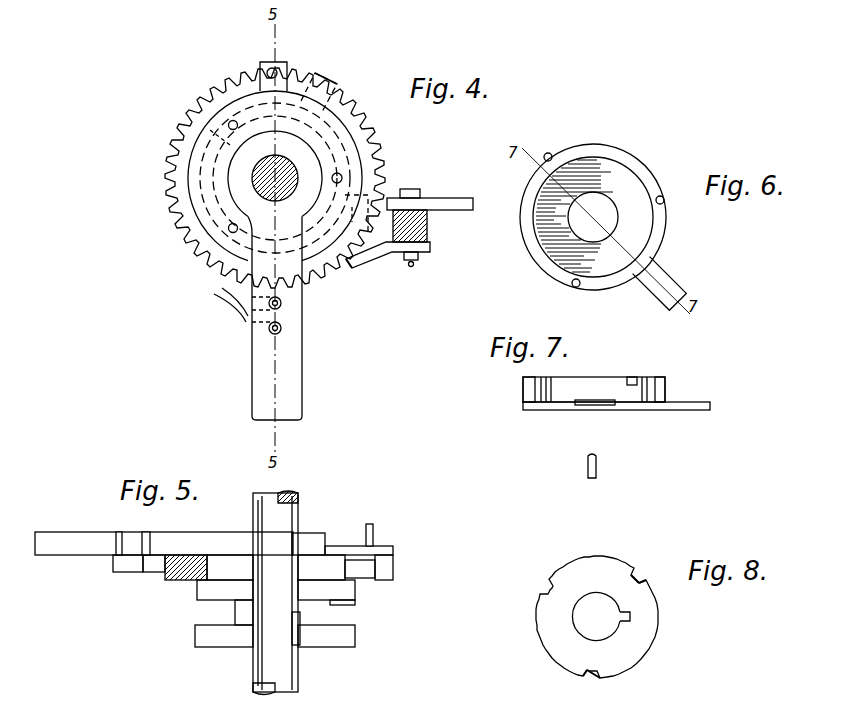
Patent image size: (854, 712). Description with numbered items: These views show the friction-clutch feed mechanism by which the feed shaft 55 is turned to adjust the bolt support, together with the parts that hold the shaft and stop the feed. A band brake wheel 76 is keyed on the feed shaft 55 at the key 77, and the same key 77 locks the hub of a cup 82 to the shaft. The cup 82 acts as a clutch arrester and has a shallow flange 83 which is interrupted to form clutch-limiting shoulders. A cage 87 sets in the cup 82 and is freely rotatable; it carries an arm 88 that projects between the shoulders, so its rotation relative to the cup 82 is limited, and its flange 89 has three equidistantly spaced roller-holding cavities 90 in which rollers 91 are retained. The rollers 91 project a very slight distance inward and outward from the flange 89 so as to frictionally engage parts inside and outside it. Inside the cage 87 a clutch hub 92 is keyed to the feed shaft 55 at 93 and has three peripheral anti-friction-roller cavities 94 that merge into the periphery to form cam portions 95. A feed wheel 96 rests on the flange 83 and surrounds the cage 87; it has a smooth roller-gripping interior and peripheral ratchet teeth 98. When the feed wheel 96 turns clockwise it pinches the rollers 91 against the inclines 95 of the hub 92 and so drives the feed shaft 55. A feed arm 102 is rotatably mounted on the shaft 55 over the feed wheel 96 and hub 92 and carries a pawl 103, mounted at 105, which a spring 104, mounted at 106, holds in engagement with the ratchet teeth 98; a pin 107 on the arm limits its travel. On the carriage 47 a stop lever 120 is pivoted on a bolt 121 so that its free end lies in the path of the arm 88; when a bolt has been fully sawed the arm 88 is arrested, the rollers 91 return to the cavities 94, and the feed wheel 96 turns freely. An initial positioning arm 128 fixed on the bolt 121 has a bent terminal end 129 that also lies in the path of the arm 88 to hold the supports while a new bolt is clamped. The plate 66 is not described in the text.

In FIG. 4, the carriage 47 is at (429, 226).
In FIG. 5, the feed shaft 55 is at (262, 658).
In FIG. 5, the plate 66 is at (200, 628).
In FIG. 5, the band brake wheel 76 is at (357, 634).
In FIG. 5, the key 77 is at (302, 640).
In FIG. 4, the cup 82 is at (328, 147).
In FIG. 5, the cup 82 is at (200, 590).
In FIG. 5, the shallow flange 83 is at (356, 590).
In FIG. 4, the cage 87 is at (172, 160).
In FIG. 6, the cage 87 is at (640, 175).
In FIG. 7, the cage 87 is at (645, 410).
In FIG. 5, the cage 87 is at (340, 604).
In FIG. 4, the arm 88 is at (330, 82).
In FIG. 6, the arm 88 is at (670, 284).
In FIG. 7, the arm 88 is at (700, 410).
In FIG. 6, the flange 89 is at (660, 228).
In FIG. 7, the flange 89 is at (668, 390).
In FIG. 5, the flange 89 is at (392, 556).
In FIG. 4, the roller-holding cavities 90 is at (200, 236).
In FIG. 6, the roller-holding cavities 90 is at (548, 153).
In FIG. 7, the roller-holding cavities 90 is at (630, 377).
In FIG. 4, the rollers 91 is at (342, 176).
In FIG. 7, the rollers 91 is at (597, 464).
In FIG. 4, the clutch hub 92 is at (342, 99).
In FIG. 8, the clutch hub 92 is at (542, 636).
In FIG. 5, the clutch hub 92 is at (330, 558).
In FIG. 5, the key 93 is at (295, 530).
In FIG. 8, the anti-friction-roller cavities 94 is at (642, 578).
In FIG. 4, the cam portions 95 is at (208, 130).
In FIG. 8, the cam portions 95 is at (650, 580).
In FIG. 4, the feed wheel 96 is at (372, 180).
In FIG. 5, the feed wheel 96 is at (376, 567).
In FIG. 4, the ratchet teeth 98 is at (384, 196).
In FIG. 4, the feed arm 102 is at (286, 315).
In FIG. 5, the feed arm 102 is at (68, 532).
In FIG. 4, the pawl 103 is at (240, 302).
In FIG. 5, the pawl 103 is at (170, 560).
In FIG. 4, the spring 104 is at (282, 330).
In FIG. 5, the spring 104 is at (138, 572).
In FIG. 4, the pawl mounting 105 is at (282, 302).
In FIG. 5, the pawl mounting 105 is at (140, 534).
In FIG. 5, the spring mounting 106 is at (118, 560).
In FIG. 4, the pin 107 is at (279, 69).
In FIG. 5, the pin 107 is at (375, 532).
In FIG. 4, the stop lever 120 is at (455, 200).
In FIG. 4, the bolt 121 is at (412, 267).
In FIG. 4, the initial positioning arm 128 is at (432, 252).
In FIG. 4, the bent terminal end 129 is at (352, 268).